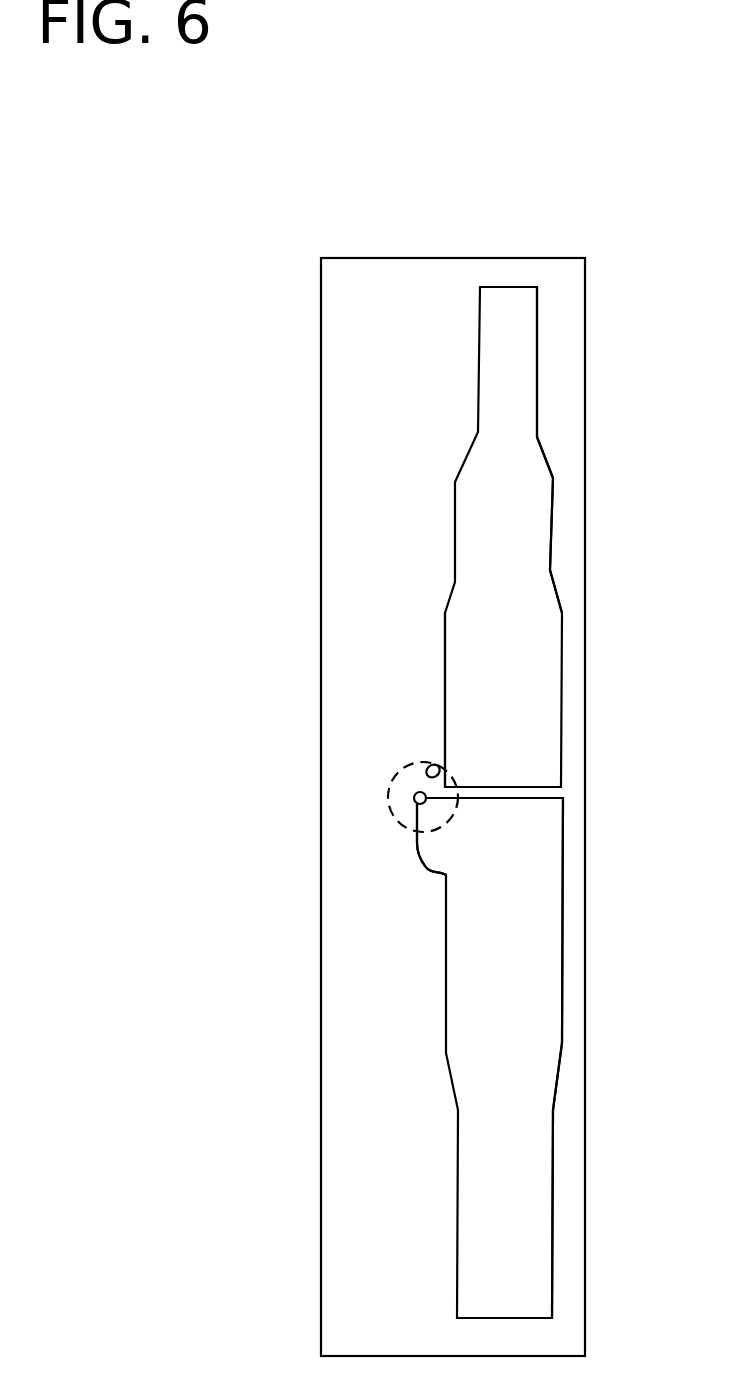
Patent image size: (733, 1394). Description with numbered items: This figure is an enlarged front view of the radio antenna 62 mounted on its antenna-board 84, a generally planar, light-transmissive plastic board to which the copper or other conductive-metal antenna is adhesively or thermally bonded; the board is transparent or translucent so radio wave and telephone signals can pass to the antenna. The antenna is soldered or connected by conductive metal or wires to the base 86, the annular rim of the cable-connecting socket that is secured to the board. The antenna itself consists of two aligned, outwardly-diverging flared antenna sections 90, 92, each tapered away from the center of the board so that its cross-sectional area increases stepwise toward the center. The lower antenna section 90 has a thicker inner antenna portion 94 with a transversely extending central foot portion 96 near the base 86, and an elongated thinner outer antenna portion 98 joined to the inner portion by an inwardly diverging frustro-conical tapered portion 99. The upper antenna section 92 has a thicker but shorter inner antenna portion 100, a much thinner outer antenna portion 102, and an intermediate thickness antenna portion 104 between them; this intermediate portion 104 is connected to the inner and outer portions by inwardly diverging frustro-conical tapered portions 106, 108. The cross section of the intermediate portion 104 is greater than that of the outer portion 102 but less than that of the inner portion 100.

The antenna element 62 is at (575, 938).
The antenna-board 84 is at (450, 258).
The base 86 is at (427, 764).
The flared antenna section 90 is at (562, 797).
The flared antenna section 92 is at (561, 743).
The inner antenna portion 94 is at (446, 938).
The central foot portion 96 is at (415, 855).
The outer antenna portion 98 is at (552, 1250).
The frustro-conical tapered portion 99 is at (560, 1080).
The inner antenna portion 100 is at (445, 655).
The outer antenna portion 102 is at (538, 355).
The intermediate thickness antenna portion 104 is at (553, 527).
The frustro-conical tapered portion 106 is at (557, 595).
The frustro-conical tapered portion 108 is at (545, 453).